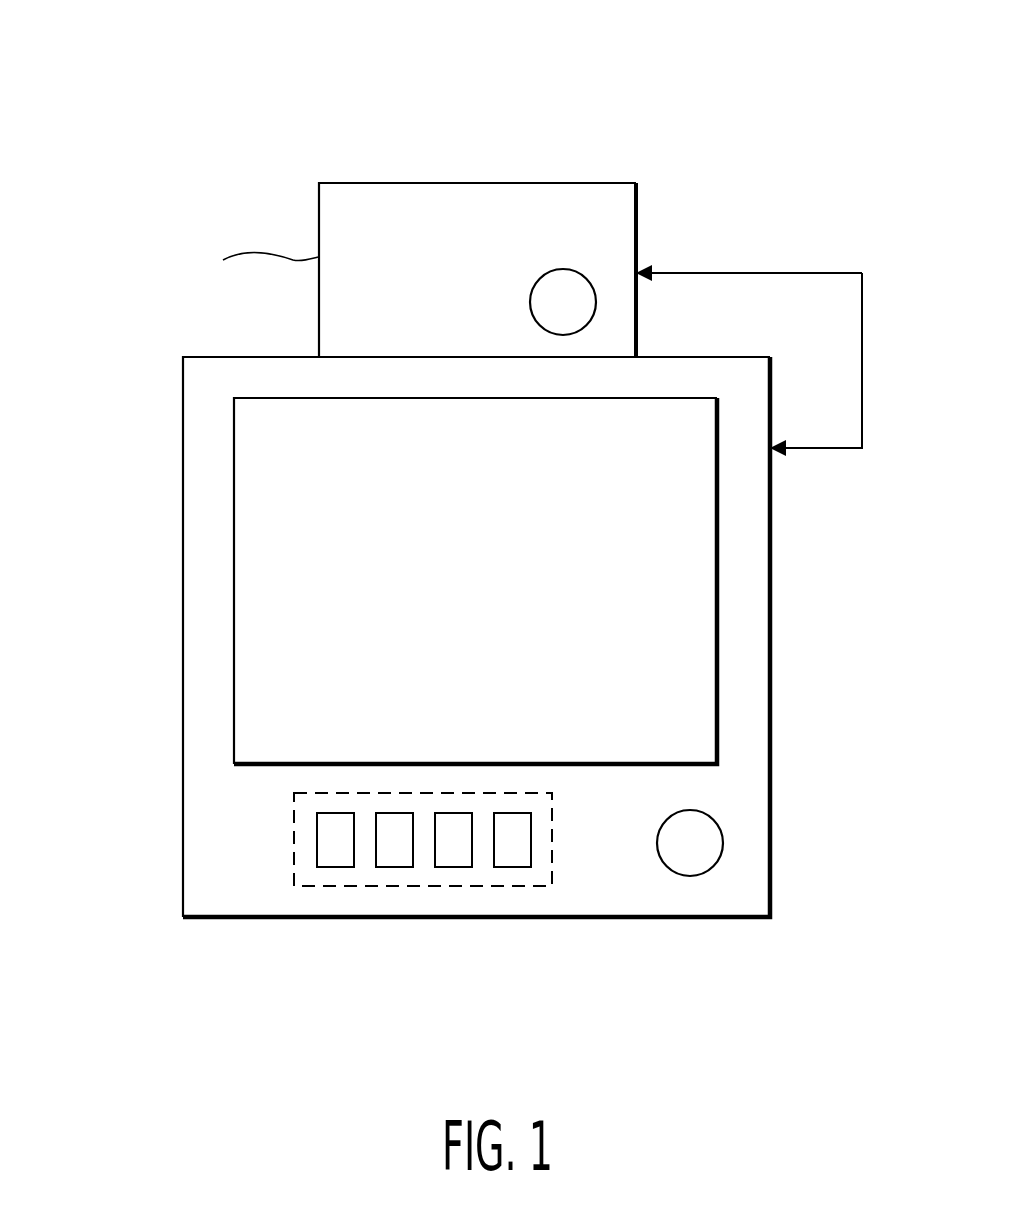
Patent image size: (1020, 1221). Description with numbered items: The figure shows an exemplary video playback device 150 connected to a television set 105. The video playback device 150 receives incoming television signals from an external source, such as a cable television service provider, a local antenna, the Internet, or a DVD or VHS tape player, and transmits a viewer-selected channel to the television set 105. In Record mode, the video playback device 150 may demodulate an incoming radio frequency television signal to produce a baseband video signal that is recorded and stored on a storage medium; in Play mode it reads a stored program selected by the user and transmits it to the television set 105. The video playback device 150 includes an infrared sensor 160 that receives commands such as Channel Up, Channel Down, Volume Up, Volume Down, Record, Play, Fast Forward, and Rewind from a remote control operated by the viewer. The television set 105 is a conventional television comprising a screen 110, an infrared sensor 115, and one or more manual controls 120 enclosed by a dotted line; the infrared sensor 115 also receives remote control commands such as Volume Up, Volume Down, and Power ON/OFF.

The television set 105 is at (772, 592).
The screen 110 is at (719, 700).
The infrared (IR) sensor 115 is at (690, 877).
The manual controls 120 is at (418, 887).
The video playback device 150 is at (370, 183).
The infrared (IR) sensor 160 is at (530, 304).